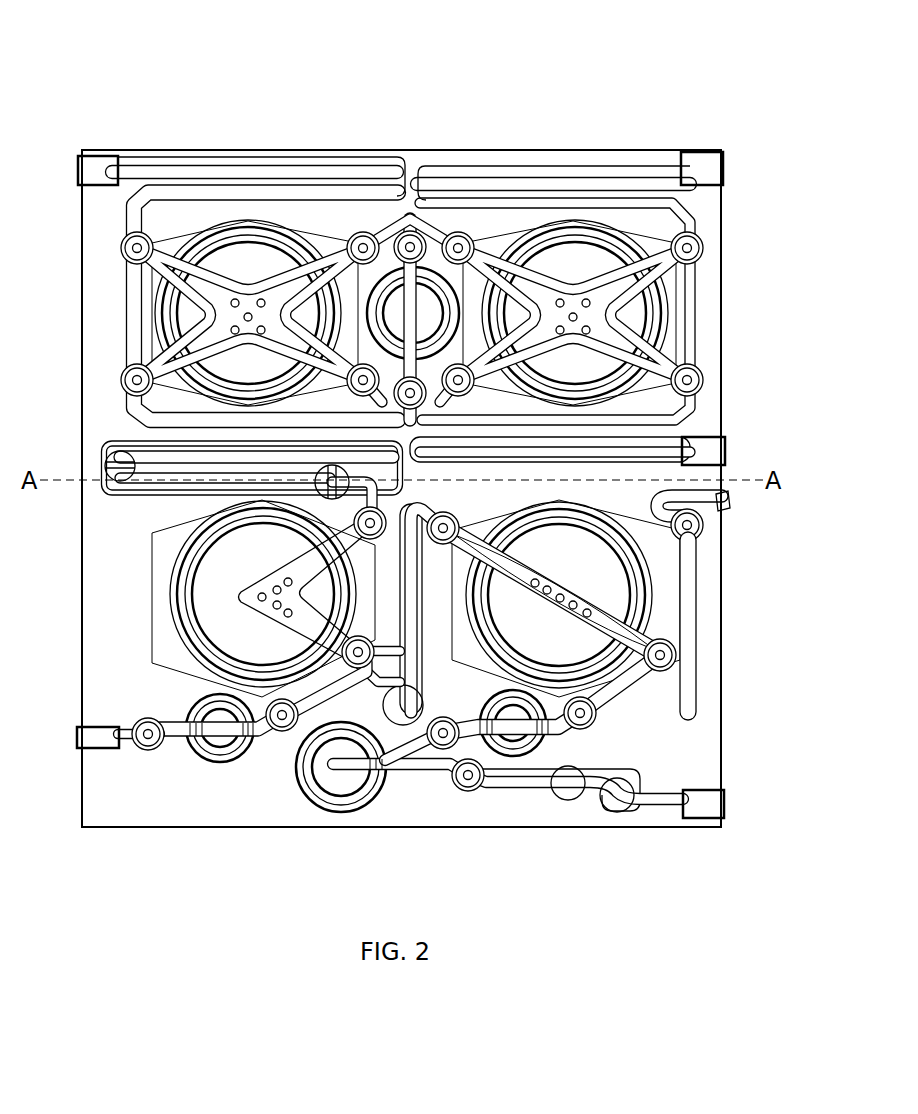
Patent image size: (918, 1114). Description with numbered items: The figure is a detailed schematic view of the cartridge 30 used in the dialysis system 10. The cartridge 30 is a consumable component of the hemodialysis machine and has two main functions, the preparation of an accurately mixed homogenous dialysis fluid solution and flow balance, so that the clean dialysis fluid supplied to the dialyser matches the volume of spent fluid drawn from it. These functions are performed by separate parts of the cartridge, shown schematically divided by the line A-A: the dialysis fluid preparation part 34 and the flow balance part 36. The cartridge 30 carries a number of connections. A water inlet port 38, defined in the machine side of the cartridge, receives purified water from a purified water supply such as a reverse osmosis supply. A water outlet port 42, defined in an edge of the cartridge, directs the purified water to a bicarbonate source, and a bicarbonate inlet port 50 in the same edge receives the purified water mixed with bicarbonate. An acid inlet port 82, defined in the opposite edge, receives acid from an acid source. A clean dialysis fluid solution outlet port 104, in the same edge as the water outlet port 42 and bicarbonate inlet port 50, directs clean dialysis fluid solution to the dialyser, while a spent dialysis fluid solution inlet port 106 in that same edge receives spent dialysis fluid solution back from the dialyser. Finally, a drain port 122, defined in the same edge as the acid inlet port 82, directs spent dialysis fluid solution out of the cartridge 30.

The dialysis system 10 is at (672, 150).
The cartridge 30 is at (82, 690).
The dialysis fluid preparation part of the cartridge 34 is at (92, 787).
The flow balance part of the cartridge 36 is at (100, 282).
The water inlet port 38 is at (688, 712).
The water outlet port 42 is at (723, 503).
The bicarbonate inlet port 50 is at (723, 802).
The acid inlet port 82 is at (88, 738).
The clean dialysis fluid solution outlet port 104 is at (700, 172).
The spent dialysis fluid solution inlet port 106 is at (712, 450).
The drain port 122 is at (92, 155).